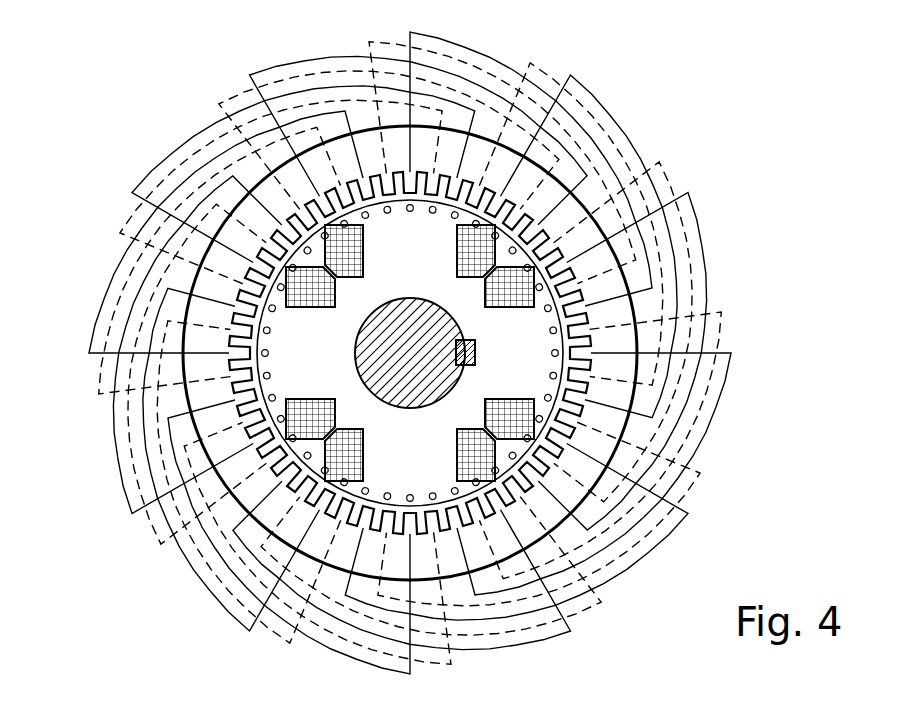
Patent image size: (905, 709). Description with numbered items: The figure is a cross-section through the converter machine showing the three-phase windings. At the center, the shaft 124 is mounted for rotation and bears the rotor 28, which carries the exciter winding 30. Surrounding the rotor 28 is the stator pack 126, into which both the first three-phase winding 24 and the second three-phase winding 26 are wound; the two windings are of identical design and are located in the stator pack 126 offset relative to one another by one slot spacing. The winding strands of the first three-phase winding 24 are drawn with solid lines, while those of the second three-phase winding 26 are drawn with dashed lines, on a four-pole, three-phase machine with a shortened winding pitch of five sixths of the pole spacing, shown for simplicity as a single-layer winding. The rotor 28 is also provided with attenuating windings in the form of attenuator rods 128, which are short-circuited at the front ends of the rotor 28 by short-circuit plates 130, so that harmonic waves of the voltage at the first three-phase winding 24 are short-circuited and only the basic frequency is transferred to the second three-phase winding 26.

The first three-phase winding 24 is at (697, 203).
The second three-phase winding 26 is at (722, 332).
The rotor 28 is at (296, 367).
The exciter winding 30 is at (366, 249).
The shaft 124 is at (412, 386).
The stator pack 126 is at (205, 283).
The attenuator rods 128 is at (547, 331).
The short-circuit plates 130 is at (543, 365).